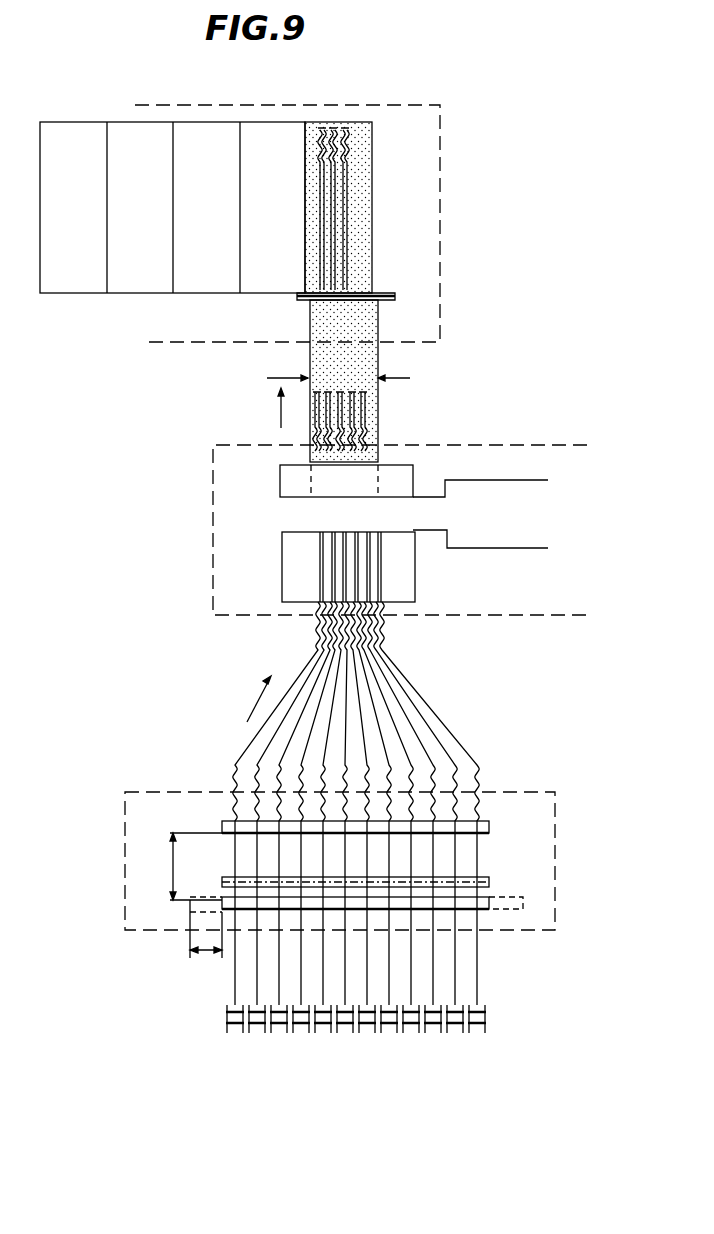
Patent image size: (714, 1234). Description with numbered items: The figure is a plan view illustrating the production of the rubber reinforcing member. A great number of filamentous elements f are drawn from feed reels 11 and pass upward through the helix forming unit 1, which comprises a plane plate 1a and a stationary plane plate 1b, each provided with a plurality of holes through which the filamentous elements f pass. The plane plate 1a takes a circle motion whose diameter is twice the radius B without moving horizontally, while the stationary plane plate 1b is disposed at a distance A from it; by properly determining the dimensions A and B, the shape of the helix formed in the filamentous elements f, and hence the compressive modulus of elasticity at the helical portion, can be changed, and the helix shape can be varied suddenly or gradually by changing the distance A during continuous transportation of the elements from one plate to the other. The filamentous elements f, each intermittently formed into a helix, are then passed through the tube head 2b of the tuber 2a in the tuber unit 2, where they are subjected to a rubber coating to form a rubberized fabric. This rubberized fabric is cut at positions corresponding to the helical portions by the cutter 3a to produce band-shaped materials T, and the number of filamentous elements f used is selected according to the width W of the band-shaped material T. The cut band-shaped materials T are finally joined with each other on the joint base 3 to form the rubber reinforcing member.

The helix forming unit 1 is at (556, 855).
The plane plate 1a is at (489, 904).
The stationary plane plate 1b is at (489, 878).
The tuber unit 2 is at (213, 537).
The tuber 2a is at (518, 538).
The tube head 2b is at (293, 549).
The joint base 3 is at (442, 212).
The cutter 3a is at (396, 297).
The feed reel 11 is at (330, 1020).
The band-shaped material T is at (252, 97).
The width of the band-shaped material W is at (352, 382).
The distance between plane plates A is at (173, 876).
The radius of circle motion B is at (206, 953).
The filamentous element f is at (460, 978).